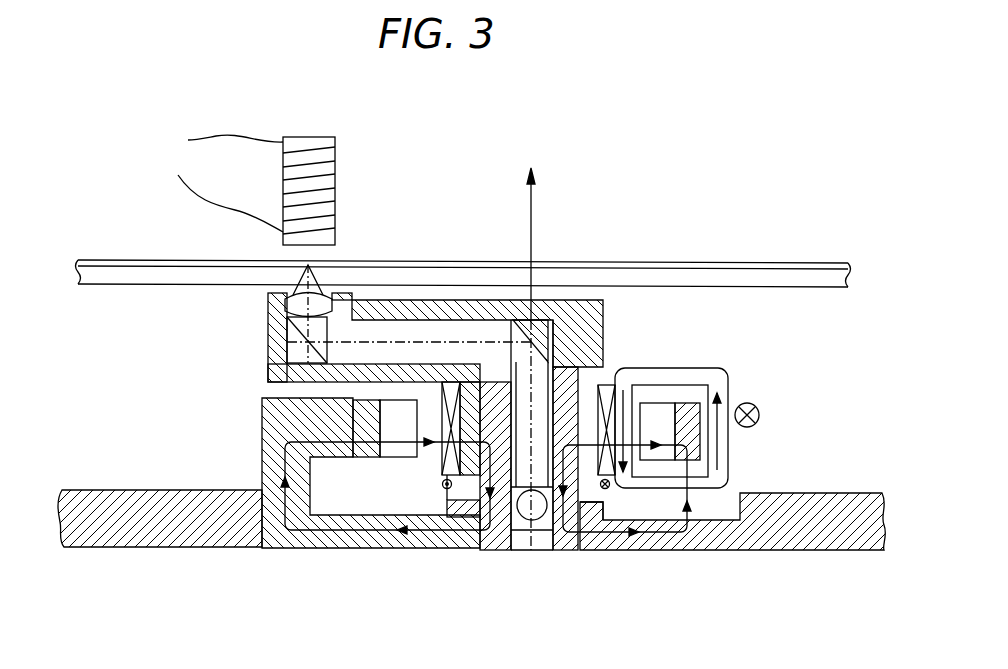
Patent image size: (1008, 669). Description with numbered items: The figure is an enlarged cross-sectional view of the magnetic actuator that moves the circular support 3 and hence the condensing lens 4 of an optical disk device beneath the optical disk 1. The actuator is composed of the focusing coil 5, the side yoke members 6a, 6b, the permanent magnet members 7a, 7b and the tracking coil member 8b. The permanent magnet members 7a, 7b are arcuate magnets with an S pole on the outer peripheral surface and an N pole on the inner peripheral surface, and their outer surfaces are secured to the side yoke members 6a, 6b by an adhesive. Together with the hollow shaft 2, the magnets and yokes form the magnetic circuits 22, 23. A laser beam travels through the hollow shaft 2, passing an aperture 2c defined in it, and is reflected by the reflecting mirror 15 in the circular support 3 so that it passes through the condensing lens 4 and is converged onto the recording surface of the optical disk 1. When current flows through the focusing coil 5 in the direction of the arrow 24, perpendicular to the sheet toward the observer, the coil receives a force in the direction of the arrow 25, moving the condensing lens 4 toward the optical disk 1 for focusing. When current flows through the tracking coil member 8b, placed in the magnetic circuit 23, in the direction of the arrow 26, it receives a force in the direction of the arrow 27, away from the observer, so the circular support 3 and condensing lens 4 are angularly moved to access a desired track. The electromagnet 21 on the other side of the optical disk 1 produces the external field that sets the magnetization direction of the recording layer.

The optical disk 1 is at (748, 275).
The hollow shaft 2 is at (493, 548).
The aperture 2c is at (535, 522).
The circular support 3 is at (601, 303).
The condensing lens 4 is at (327, 298).
The focusing coil 5 is at (443, 473).
The side yoke member 6a is at (348, 458).
The side yoke member 6b is at (700, 460).
The permanent magnet member 7a is at (397, 458).
The permanent magnet member 7b is at (666, 462).
The tracking coil member 8b is at (717, 372).
The reflecting mirror 15 is at (307, 343).
The electromagnet 21 is at (335, 152).
The magnetic circuit 22 is at (430, 537).
The magnetic circuit 23 is at (616, 540).
The arrow 24 is at (440, 520).
The arrow 25 is at (531, 217).
The arrow 26 is at (687, 386).
The arrow 27 is at (759, 413).